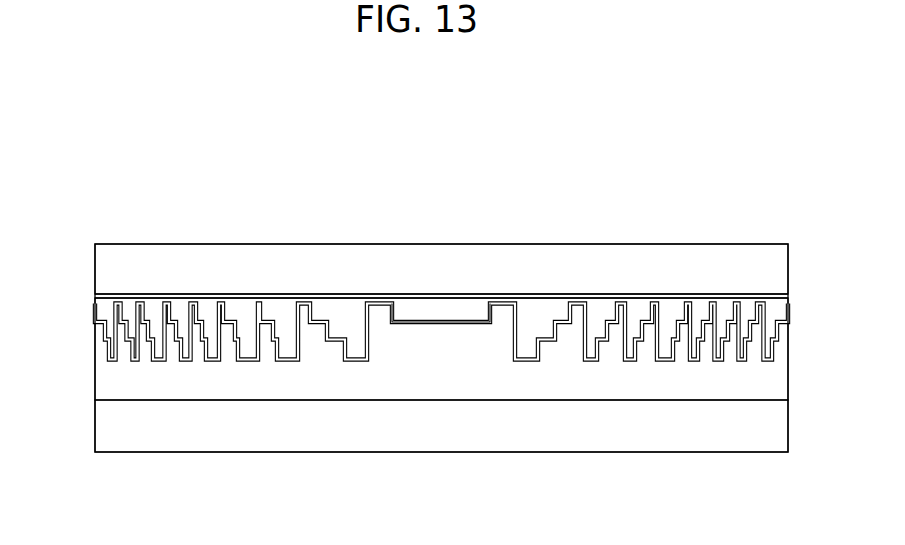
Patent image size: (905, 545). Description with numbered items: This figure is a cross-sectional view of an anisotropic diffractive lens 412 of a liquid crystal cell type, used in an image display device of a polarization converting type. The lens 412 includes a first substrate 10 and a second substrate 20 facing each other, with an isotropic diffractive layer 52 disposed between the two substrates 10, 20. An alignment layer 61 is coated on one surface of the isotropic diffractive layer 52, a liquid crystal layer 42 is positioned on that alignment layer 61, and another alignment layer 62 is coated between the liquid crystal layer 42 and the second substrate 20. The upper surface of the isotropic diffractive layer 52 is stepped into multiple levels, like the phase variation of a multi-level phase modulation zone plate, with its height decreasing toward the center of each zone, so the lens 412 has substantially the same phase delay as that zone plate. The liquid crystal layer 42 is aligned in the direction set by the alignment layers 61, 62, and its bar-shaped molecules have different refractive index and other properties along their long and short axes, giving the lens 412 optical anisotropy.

The anisotropic diffractive lens 412 is at (458, 180).
The first substrate 10 is at (105, 427).
The second substrate 20 is at (105, 268).
The liquid crystal layer 42 is at (105, 308).
The isotropic diffractive layer 52 is at (105, 378).
The alignment layer 61 is at (447, 323).
The alignment layer 62 is at (208, 297).